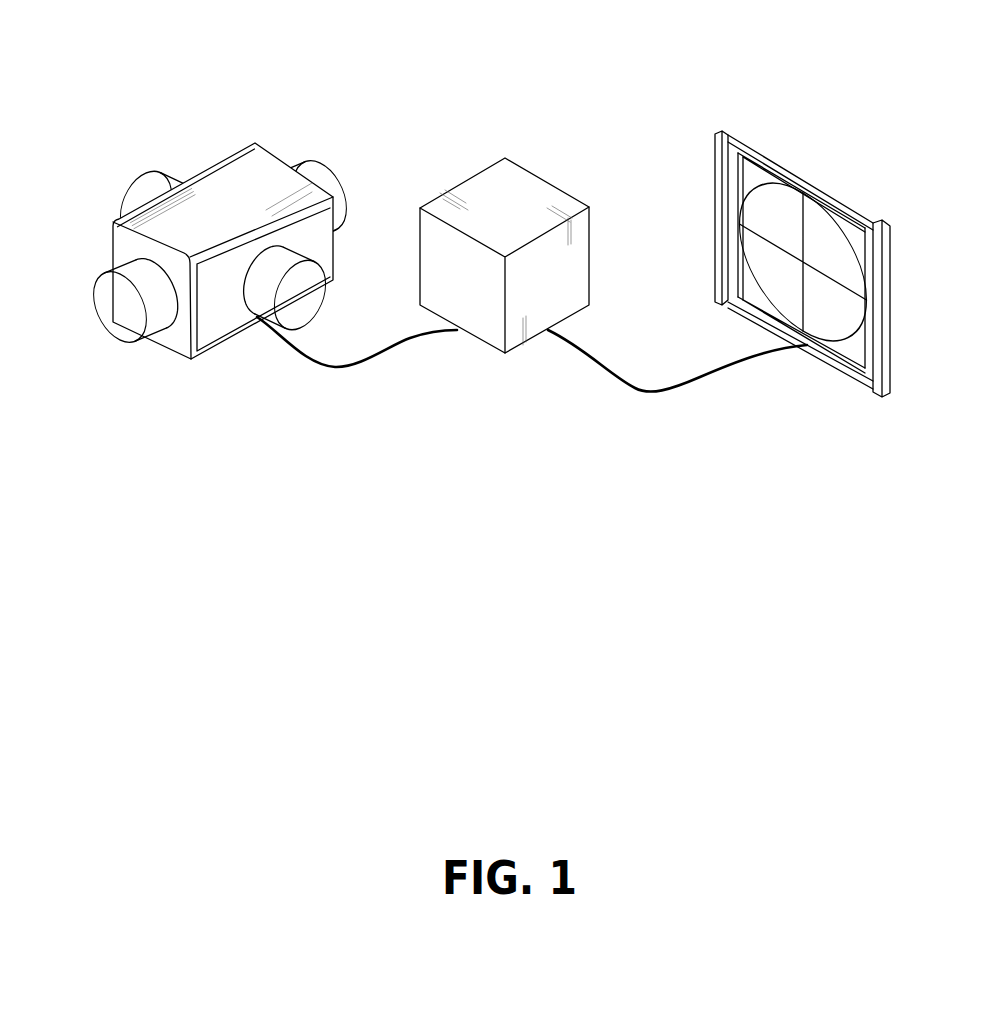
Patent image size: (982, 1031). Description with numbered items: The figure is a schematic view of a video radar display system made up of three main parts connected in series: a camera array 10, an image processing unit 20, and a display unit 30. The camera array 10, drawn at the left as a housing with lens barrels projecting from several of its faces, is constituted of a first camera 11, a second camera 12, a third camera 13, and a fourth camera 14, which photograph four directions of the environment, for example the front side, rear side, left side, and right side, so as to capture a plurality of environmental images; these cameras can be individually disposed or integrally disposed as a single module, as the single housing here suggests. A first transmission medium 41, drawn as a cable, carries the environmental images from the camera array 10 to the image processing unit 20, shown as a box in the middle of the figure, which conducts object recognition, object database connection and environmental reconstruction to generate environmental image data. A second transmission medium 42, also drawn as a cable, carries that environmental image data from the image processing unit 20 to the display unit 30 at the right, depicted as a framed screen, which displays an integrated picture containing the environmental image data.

The camera array 10 is at (318, 95).
The first camera 11 is at (121, 333).
The second camera 12 is at (333, 182).
The third camera 13 is at (255, 293).
The fourth camera 14 is at (153, 182).
The image processing unit 20 is at (538, 185).
The display unit 30 is at (795, 173).
The first transmission medium 41 is at (363, 363).
The second transmission medium 42 is at (668, 390).